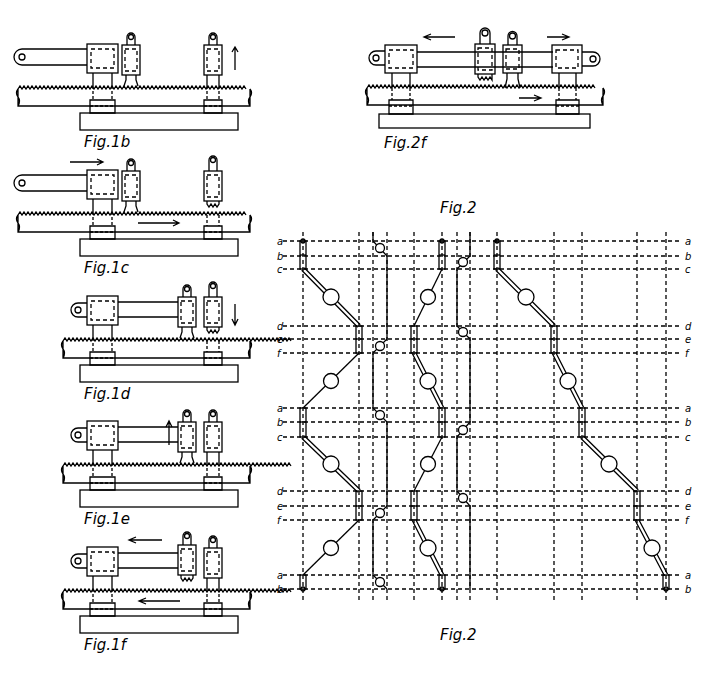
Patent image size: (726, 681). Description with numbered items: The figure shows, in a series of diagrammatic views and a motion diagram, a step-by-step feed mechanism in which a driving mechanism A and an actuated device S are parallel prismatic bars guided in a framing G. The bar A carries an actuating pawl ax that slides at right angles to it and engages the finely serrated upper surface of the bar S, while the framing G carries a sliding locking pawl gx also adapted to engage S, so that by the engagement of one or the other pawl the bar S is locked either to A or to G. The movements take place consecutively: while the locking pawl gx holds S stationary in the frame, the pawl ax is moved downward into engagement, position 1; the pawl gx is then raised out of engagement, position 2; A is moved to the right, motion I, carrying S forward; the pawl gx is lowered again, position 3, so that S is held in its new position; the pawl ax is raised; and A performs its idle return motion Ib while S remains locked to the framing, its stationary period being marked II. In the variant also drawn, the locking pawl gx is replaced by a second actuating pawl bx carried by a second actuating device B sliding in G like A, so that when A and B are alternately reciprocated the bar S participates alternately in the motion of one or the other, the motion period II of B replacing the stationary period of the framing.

In FIG. 1B, the driving mechanism A is at (66, 78).
In FIG. 1C, the driving mechanism A is at (66, 204).
In FIG. 1D, the driving mechanism A is at (117, 330).
In FIG. 1E, the driving mechanism A is at (117, 455).
In FIG. 1F, the driving mechanism A is at (117, 581).
In FIG. 2F, the driving mechanism A is at (390, 79).
In FIG. 2, the driving mechanism A is at (305, 241).
In FIG. 2F, the second actuating device B is at (509, 74).
In FIG. 2, the second actuating device B is at (441, 241).
In FIG. 1B, the actuated device S is at (134, 105).
In FIG. 1C, the actuated device S is at (134, 231).
In FIG. 1D, the actuated device S is at (175, 357).
In FIG. 1E, the actuated device S is at (175, 482).
In FIG. 1F, the actuated device S is at (175, 608).
In FIG. 2F, the actuated device S is at (483, 106).
In FIG. 2, the actuated device S is at (499, 241).
In FIG. 1B, the framing G is at (159, 129).
In FIG. 1C, the framing G is at (159, 255).
In FIG. 1D, the framing G is at (159, 381).
In FIG. 1E, the framing G is at (159, 506).
In FIG. 1F, the framing G is at (159, 632).
In FIG. 2F, the framing G is at (484, 132).
In FIG. 1B, the actuating pawl ax is at (141, 55).
In FIG. 1C, the actuating pawl ax is at (141, 181).
In FIG. 1D, the actuating pawl ax is at (194, 306).
In FIG. 1E, the actuating pawl ax is at (194, 431).
In FIG. 1F, the actuating pawl ax is at (195, 552).
In FIG. 2F, the actuating pawl ax is at (493, 50).
In FIG. 2, the actuating pawl ax is at (374, 241).
In FIG. 2F, the second actuating pawl bx is at (520, 55).
In FIG. 2, the second actuating pawl bx is at (470, 241).
In FIG. 1B, the locking pawl gx is at (224, 68).
In FIG. 1C, the locking pawl gx is at (224, 194).
In FIG. 1D, the locking pawl gx is at (223, 319).
In FIG. 1E, the locking pawl gx is at (224, 445).
In FIG. 1F, the locking pawl gx is at (224, 571).
In FIG. 1C, the forward motion of A I is at (118, 192).
In FIG. 1F, the idle return motion of A Ib is at (154, 571).
In FIG. 2F, the idle return motion of A Ib is at (446, 37).
In FIG. 2F, the stationary or reciprocating period of G or B II is at (538, 68).
In FIG. 1B, the position 1 is at (235, 63).
In FIG. 1D, the position 2 is at (235, 309).
In FIG. 1E, the position 3 is at (168, 438).